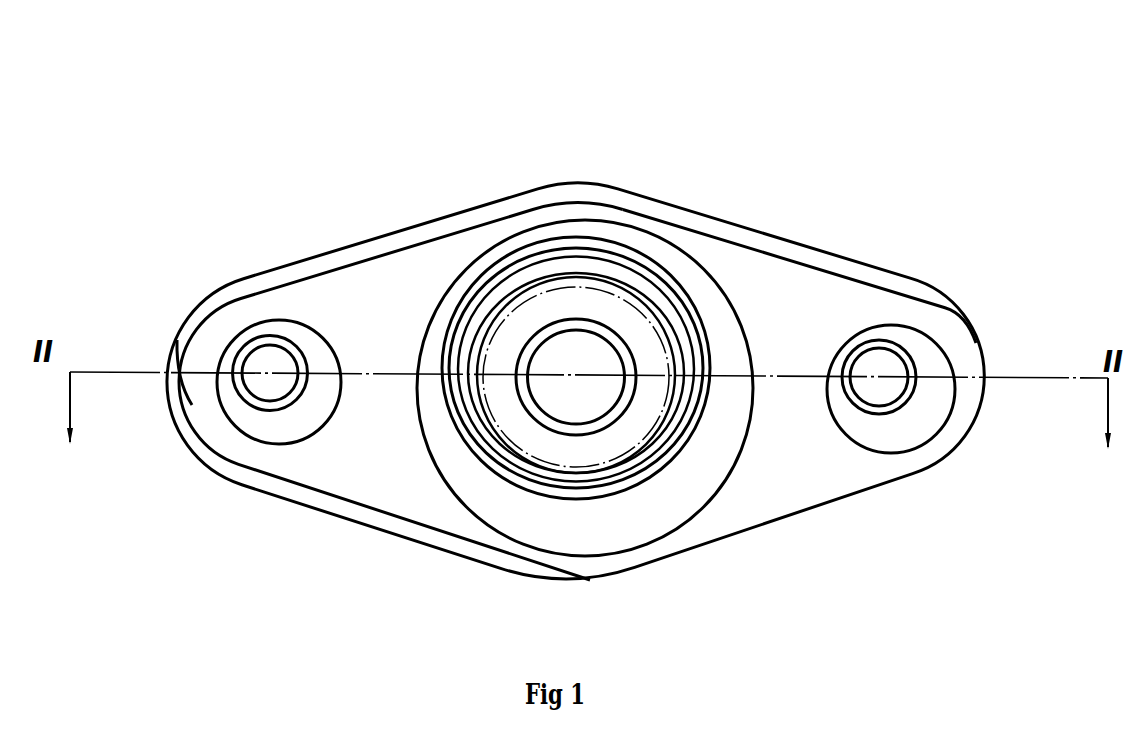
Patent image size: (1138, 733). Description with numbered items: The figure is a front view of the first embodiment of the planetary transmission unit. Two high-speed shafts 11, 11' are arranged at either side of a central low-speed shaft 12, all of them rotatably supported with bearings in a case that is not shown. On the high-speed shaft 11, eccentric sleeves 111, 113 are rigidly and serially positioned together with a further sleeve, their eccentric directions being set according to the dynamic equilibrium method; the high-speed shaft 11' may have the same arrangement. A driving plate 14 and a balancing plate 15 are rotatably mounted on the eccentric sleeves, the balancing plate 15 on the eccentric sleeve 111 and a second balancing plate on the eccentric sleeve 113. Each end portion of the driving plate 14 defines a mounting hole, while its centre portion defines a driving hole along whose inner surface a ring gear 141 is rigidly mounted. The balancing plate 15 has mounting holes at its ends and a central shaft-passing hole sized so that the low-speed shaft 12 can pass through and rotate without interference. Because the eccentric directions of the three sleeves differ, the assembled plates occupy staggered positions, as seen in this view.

The high-speed shaft 11 is at (333, 207).
The high-speed shaft 11' is at (953, 233).
The eccentric sleeve 111 is at (205, 442).
The eccentric sleeve 113 is at (272, 330).
The low-speed shaft 12 is at (603, 348).
The driving plate 14 is at (812, 257).
The ring gear 141 is at (676, 290).
The balancing plate 15 is at (327, 458).